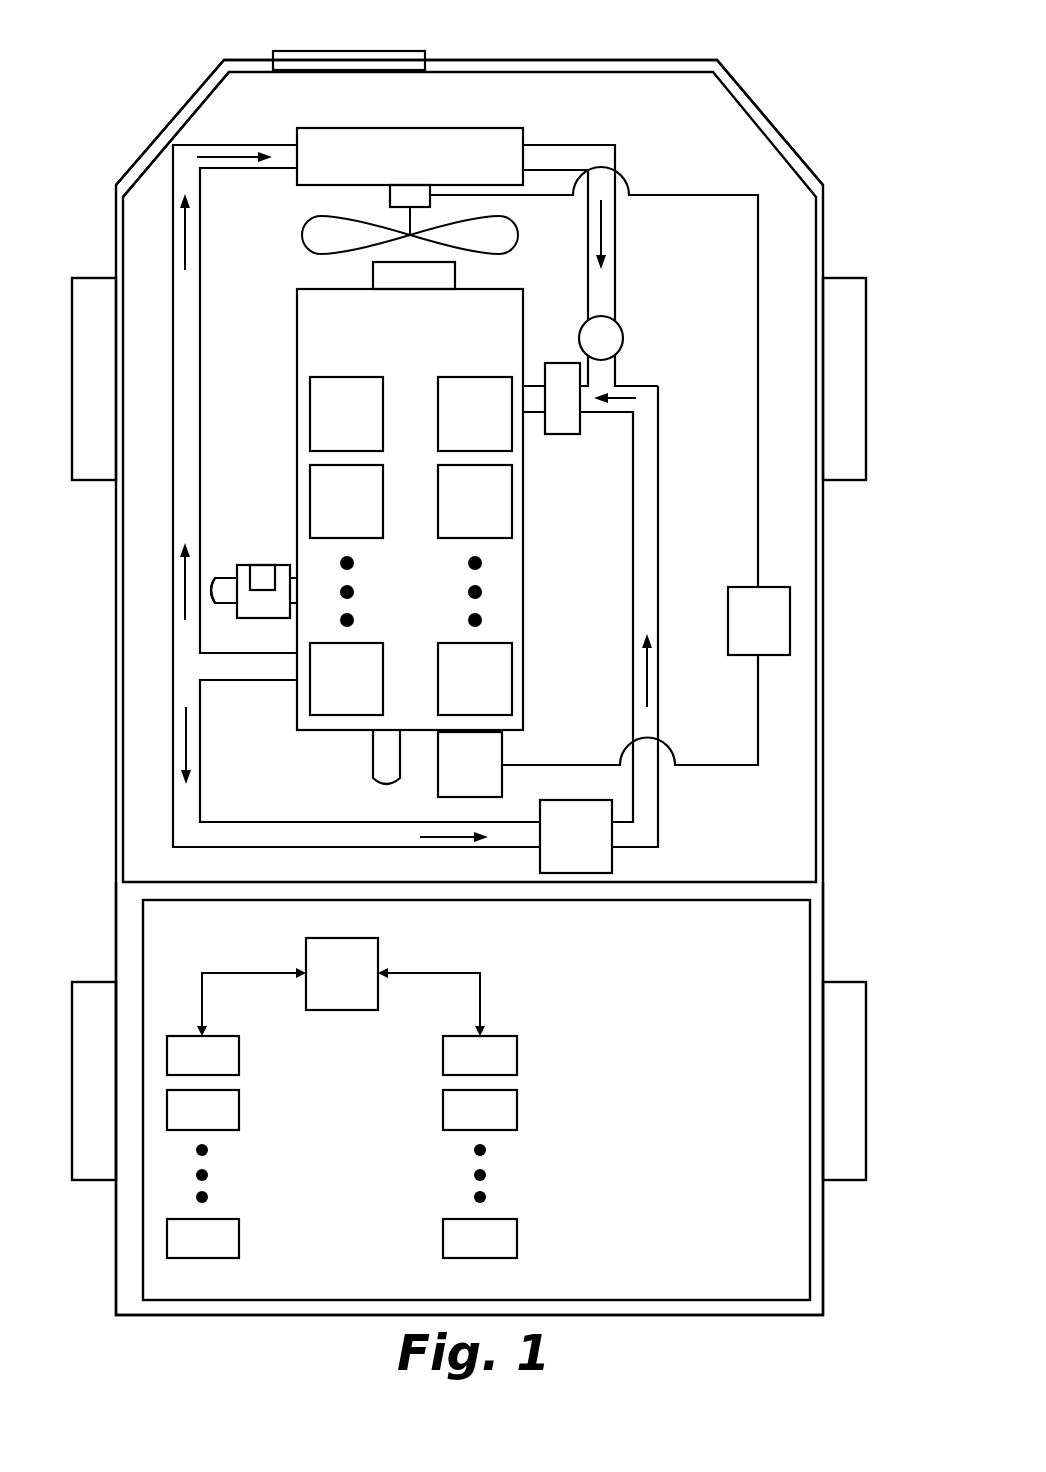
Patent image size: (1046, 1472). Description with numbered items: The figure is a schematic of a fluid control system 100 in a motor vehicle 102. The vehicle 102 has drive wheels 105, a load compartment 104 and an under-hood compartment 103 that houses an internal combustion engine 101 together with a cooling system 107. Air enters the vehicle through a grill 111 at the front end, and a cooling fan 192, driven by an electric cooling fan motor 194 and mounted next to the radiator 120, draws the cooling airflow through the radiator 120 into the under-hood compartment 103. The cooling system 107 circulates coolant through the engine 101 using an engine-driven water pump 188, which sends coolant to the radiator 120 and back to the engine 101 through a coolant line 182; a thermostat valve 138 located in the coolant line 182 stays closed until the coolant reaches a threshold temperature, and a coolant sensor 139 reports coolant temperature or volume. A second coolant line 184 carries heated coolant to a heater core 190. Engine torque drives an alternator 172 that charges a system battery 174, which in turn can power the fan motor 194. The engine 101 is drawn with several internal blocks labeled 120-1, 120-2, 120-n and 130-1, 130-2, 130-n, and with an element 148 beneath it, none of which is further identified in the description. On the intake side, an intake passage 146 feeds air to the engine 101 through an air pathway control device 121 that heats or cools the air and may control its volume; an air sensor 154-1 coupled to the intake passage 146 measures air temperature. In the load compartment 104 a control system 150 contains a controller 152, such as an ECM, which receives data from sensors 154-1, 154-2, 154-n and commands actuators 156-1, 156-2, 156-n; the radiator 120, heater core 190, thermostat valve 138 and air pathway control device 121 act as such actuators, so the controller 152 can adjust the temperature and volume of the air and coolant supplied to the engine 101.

The fluid control system 100 is at (150, 70).
The internal combustion engine 101 is at (391, 356).
The motor vehicle 102 is at (824, 873).
The under-hood compartment 103 is at (133, 807).
The load compartment 104 is at (150, 1265).
The drive wheels 105 is at (92, 300).
The cooling system 107 is at (150, 183).
The grill 111 is at (332, 60).
The radiator 120 is at (485, 150).
The cylinder 120-1 is at (318, 424).
The cylinder 120-2 is at (318, 512).
The cylinder 120-n is at (318, 690).
The air pathway control device 121 is at (263, 608).
The fuel injector 130-1 is at (446, 424).
The fuel injector 130-2 is at (446, 512).
The fuel injector 130-n is at (446, 690).
The thermostat valve 138 is at (603, 337).
The coolant sensor 139 is at (563, 425).
The intake passage 146 is at (220, 597).
The exhaust pipe 148 is at (382, 767).
The control system 150 is at (240, 942).
The controller 152 is at (323, 986).
The air sensor 154-1 is at (263, 570).
The sensor 154-2 is at (174, 1121).
The sensor 154-n is at (174, 1250).
The actuator 156-1 is at (451, 1067).
The actuator 156-2 is at (451, 1121).
The actuator 156-n is at (451, 1250).
The alternator 172 is at (451, 776).
The system battery 174 is at (740, 632).
The coolant line 182 is at (200, 290).
The coolant line 184 is at (659, 520).
The engine-driven water pump 188 is at (395, 287).
The heater core 190 is at (557, 848).
The cooling fan 192 is at (302, 228).
The electric cooling fan motor 194 is at (390, 192).